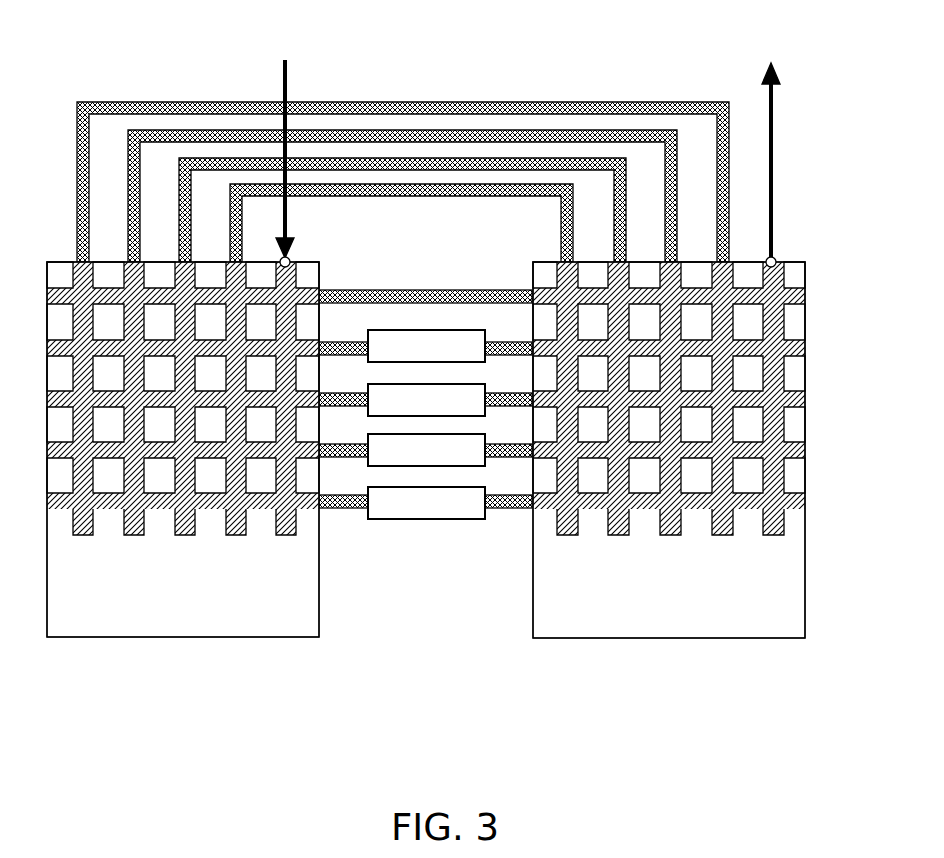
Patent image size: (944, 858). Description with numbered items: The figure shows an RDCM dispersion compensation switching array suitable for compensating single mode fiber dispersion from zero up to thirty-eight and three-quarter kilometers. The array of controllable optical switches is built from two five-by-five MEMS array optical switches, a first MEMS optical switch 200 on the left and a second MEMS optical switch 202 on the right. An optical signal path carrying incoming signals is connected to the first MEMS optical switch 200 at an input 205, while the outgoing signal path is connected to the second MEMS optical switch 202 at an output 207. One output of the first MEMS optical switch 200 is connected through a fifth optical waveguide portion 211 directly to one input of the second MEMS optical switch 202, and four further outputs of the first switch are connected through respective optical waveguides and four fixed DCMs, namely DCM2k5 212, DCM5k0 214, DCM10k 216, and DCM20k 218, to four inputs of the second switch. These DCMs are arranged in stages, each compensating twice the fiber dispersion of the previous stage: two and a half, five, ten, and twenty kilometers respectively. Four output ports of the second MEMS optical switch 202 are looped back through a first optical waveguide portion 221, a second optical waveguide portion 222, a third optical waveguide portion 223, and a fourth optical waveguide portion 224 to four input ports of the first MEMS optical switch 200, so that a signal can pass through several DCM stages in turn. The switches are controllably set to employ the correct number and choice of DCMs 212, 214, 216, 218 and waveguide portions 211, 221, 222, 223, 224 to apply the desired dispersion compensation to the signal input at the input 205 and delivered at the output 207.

The first 5×5 MEMS array optical switch 200 is at (167, 627).
The second 5×5 MEMS array optical switch 202 is at (654, 627).
The input 205 is at (290, 258).
The output 207 is at (776, 258).
The fifth optical waveguide portion 211 is at (443, 289).
The DCM2k5 (stage one fixed DCM) 212 is at (400, 330).
The DCM5k0 (stage two fixed DCM) 214 is at (400, 384).
The DCM10k (stage three fixed DCM) 216 is at (400, 434).
The DCM20k (stage four fixed DCM) 218 is at (400, 486).
The first optical waveguide portion 221 is at (407, 184).
The second optical waveguide portion 222 is at (468, 158).
The third optical waveguide portion 223 is at (527, 130).
The fourth optical waveguide portion 224 is at (588, 102).